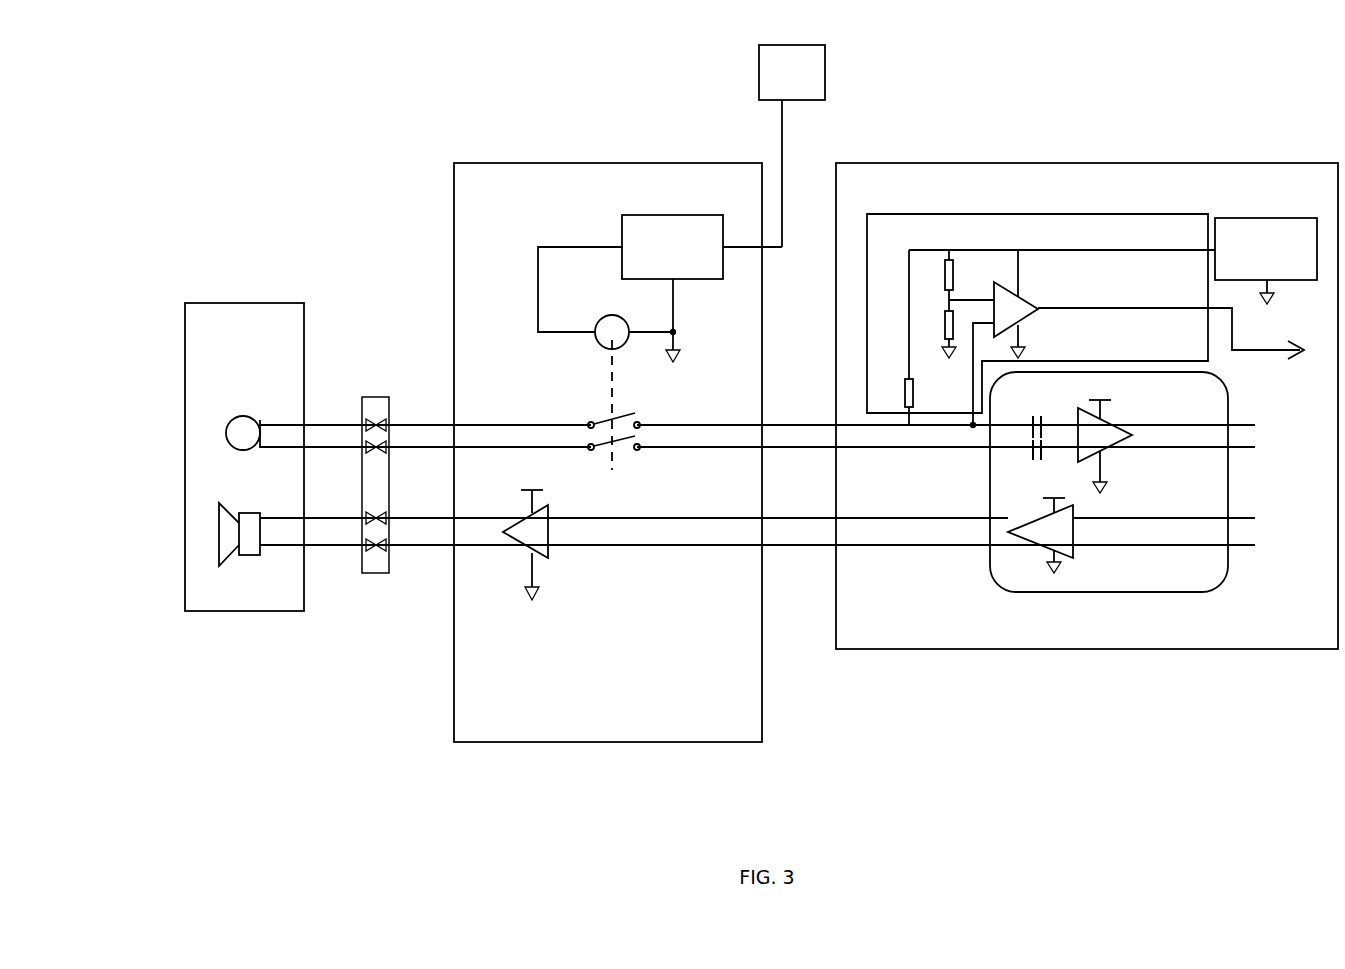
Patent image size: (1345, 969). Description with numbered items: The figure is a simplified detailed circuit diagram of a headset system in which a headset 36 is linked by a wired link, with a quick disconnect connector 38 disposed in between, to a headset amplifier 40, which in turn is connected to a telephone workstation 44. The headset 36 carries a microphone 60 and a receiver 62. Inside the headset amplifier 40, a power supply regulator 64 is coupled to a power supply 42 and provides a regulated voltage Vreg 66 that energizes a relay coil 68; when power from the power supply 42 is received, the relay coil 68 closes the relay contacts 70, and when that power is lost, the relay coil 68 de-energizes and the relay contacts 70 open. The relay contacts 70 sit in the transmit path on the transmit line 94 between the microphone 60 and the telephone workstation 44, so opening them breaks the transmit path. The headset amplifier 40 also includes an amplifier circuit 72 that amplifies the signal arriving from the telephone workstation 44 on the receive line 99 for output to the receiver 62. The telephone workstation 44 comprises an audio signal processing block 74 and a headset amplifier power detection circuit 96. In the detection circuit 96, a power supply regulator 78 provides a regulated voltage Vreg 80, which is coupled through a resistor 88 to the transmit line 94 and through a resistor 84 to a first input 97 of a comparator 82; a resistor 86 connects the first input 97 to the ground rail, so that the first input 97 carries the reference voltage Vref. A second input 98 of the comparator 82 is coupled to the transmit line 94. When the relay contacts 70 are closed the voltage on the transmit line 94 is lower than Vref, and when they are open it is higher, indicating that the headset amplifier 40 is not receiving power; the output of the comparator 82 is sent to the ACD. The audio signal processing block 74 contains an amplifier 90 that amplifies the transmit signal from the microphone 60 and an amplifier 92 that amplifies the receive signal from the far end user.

The headset 36 is at (244, 457).
The quick disconnect connector 38 is at (377, 459).
The headset amplifier 40 is at (608, 452).
The power supply 42 is at (792, 146).
The telephone workstation 44 is at (1087, 406).
The microphone 60 is at (251, 415).
The receiver 62 is at (251, 522).
The power supply regulator 64 is at (702, 247).
The regulated voltage Vreg 66 is at (580, 279).
The relay coil 68 is at (637, 374).
The relay contacts 70 is at (623, 454).
The amplifier circuit 72 is at (525, 536).
The audio signal processing block 74 is at (1218, 588).
The power supply regulator 78 is at (1266, 261).
The regulated voltage Vreg 80 is at (1062, 239).
The comparator 82 is at (1145, 315).
The resistor 84 is at (936, 280).
The resistor 86 is at (937, 334).
The resistor 88 is at (895, 337).
The amplifier 90 is at (1105, 440).
The amplifier 92 is at (1040, 529).
The transmit line 94 is at (695, 422).
The headset amplifier power detection circuit 96 is at (925, 213).
The first input of comparator 97 is at (971, 291).
The second input of comparator 98 is at (984, 375).
The receive line 99 is at (702, 513).